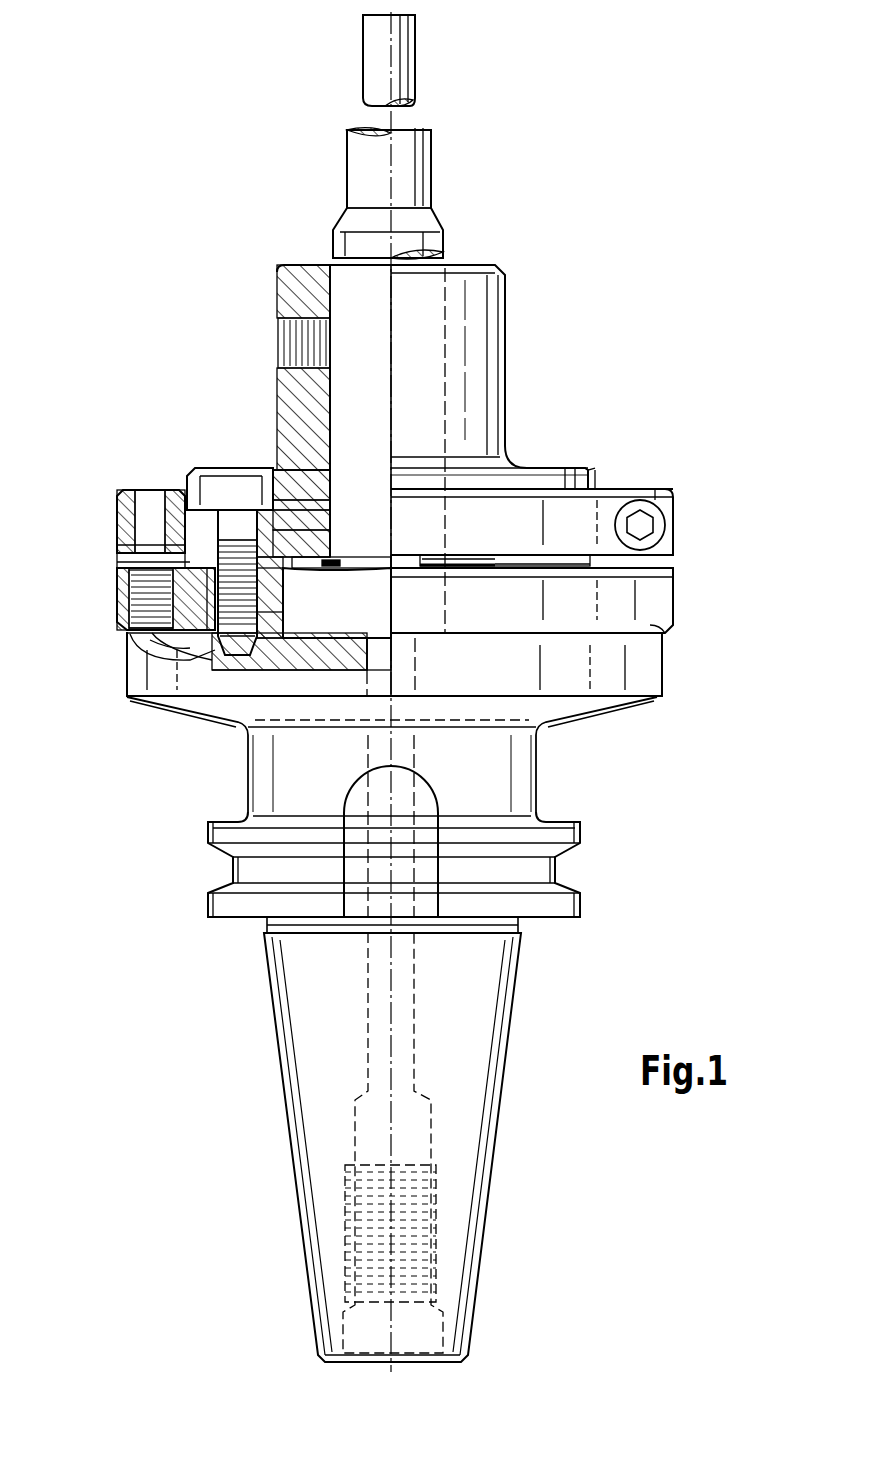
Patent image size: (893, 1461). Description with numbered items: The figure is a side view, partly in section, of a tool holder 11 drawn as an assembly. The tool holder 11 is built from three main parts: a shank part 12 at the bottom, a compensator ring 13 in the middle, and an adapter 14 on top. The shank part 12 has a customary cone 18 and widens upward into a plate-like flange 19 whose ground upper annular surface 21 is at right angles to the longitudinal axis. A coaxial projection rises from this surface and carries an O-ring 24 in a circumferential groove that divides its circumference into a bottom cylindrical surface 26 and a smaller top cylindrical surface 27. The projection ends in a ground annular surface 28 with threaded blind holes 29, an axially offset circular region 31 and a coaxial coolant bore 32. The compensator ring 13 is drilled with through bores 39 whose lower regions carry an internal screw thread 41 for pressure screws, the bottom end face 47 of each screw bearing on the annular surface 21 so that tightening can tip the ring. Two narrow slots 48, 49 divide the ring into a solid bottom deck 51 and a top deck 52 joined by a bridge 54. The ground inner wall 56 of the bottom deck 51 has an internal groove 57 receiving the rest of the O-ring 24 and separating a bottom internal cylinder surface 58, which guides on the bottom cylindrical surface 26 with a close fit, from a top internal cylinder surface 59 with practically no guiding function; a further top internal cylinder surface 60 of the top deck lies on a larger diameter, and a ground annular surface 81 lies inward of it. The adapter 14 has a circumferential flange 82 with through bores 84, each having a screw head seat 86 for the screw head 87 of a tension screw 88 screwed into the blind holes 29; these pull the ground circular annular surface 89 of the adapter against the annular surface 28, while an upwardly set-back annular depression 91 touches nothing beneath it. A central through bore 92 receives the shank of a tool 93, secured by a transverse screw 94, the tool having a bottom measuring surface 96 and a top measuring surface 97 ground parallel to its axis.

The tool holder 11 is at (643, 328).
The shank part 12 is at (290, 1162).
The compensator ring 13 is at (675, 531).
The adapter 14 is at (515, 318).
The cone 18 is at (481, 1232).
The plate-like flange 19 is at (660, 680).
The annular surface 21 is at (635, 625).
The O-ring 24 is at (200, 597).
The bottom cylindrical surface 26 is at (180, 612).
The top cylindrical surface 27 is at (125, 572).
The annular surface 28 is at (312, 552).
The blind holes 29 is at (263, 630).
The circular region 31 is at (351, 615).
The coolant bore 32 is at (420, 765).
The through bores 39 is at (145, 497).
The internal screw thread 41 is at (130, 647).
The bottom end face 47 is at (182, 648).
The slot 48 is at (673, 565).
The slot 49 is at (115, 560).
The bottom deck 51 is at (675, 618).
The top deck 52 is at (676, 505).
The bridge 54 is at (405, 560).
The inner wall 56 is at (255, 612).
The internal groove 57 is at (258, 587).
The bottom internal cylinder surface 58 is at (233, 633).
The top internal cylinder surface 59 is at (230, 560).
The top internal cylinder surface 60 is at (180, 520).
The annular surface 81 is at (175, 545).
The circumferential flange 82 is at (600, 482).
The through bores 84 is at (295, 530).
The screw head seat 86 is at (285, 520).
The screw head 87 is at (235, 480).
The tension screws 88 is at (283, 490).
The circular annular surface 89 is at (380, 570).
The annular depression 91 is at (372, 551).
The through bore 92 is at (345, 295).
The tool 93 is at (432, 150).
The transverse screw 94 is at (282, 335).
The bottom circular cylindrical measuring surface 96 is at (345, 165).
The top circular cylindrical measuring surface 97 is at (363, 57).